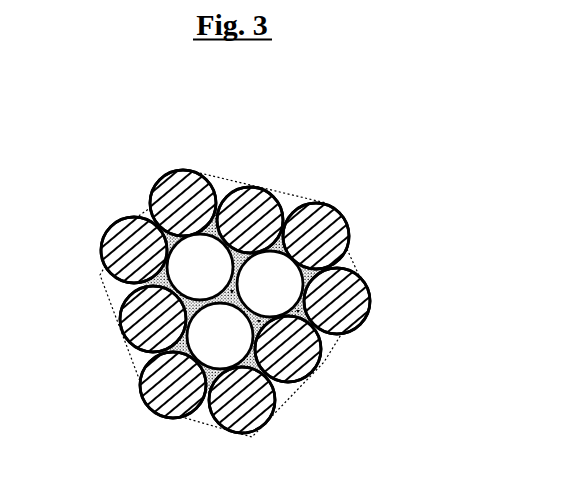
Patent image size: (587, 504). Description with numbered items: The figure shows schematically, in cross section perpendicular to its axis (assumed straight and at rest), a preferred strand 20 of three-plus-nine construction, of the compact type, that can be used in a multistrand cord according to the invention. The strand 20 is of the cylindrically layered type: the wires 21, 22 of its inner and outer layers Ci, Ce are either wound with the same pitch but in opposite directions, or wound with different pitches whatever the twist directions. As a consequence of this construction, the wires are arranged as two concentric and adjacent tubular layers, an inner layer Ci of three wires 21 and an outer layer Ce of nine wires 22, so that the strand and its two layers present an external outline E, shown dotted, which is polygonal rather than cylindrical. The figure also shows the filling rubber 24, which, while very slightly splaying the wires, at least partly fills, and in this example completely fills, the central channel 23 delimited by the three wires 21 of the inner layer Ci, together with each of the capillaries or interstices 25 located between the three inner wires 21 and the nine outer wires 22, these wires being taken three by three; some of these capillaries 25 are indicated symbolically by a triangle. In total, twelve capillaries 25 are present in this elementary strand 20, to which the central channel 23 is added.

The strand 20 is at (337, 185).
The wires of the inner layer 21 is at (222, 335).
The wires of the outer layer 22 is at (154, 320).
The central channel 23 is at (232, 295).
The filling rubber 24 is at (215, 228).
The capillaries or interstices 25 is at (297, 313).
The outer layer Ce is at (136, 208).
The inner layer Ci is at (180, 352).
The external outline E is at (330, 357).